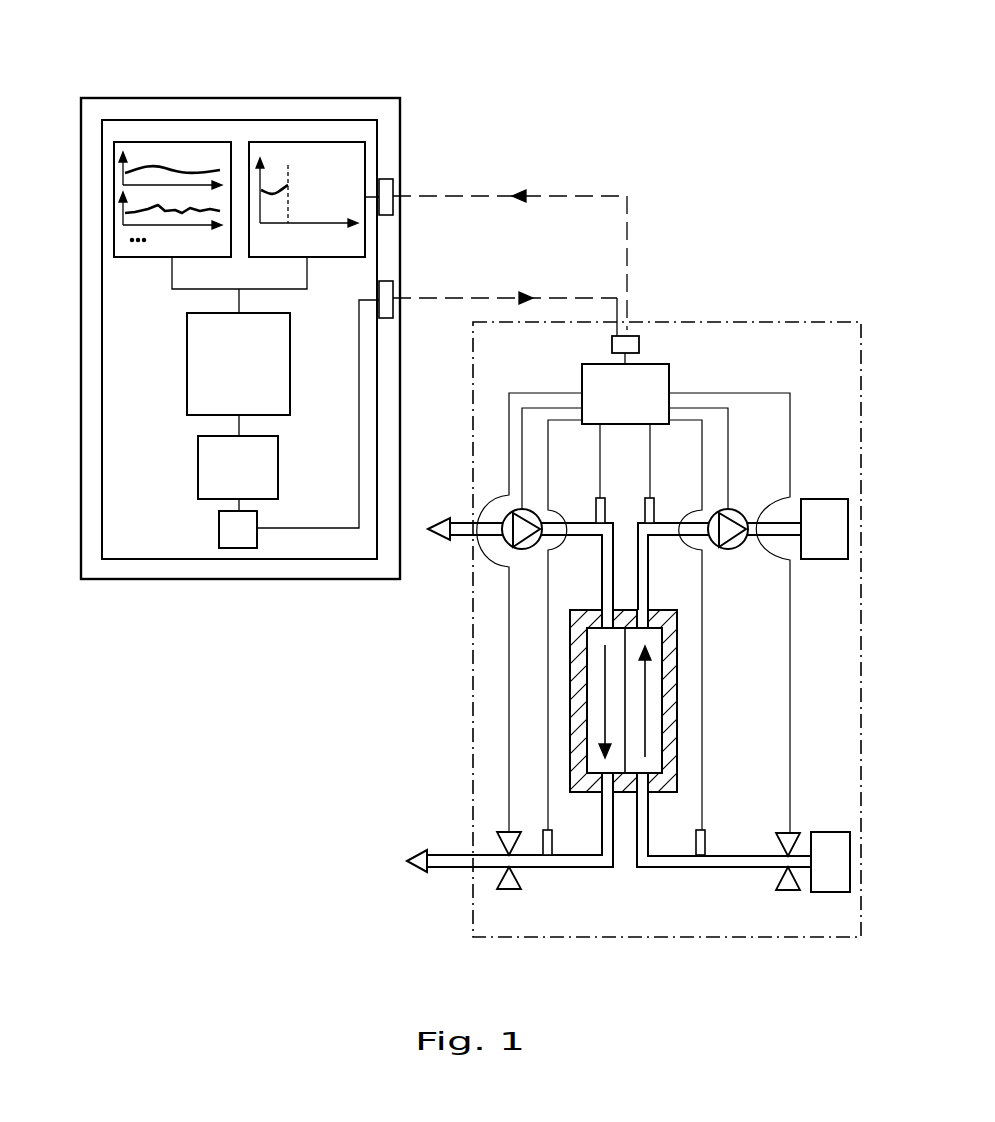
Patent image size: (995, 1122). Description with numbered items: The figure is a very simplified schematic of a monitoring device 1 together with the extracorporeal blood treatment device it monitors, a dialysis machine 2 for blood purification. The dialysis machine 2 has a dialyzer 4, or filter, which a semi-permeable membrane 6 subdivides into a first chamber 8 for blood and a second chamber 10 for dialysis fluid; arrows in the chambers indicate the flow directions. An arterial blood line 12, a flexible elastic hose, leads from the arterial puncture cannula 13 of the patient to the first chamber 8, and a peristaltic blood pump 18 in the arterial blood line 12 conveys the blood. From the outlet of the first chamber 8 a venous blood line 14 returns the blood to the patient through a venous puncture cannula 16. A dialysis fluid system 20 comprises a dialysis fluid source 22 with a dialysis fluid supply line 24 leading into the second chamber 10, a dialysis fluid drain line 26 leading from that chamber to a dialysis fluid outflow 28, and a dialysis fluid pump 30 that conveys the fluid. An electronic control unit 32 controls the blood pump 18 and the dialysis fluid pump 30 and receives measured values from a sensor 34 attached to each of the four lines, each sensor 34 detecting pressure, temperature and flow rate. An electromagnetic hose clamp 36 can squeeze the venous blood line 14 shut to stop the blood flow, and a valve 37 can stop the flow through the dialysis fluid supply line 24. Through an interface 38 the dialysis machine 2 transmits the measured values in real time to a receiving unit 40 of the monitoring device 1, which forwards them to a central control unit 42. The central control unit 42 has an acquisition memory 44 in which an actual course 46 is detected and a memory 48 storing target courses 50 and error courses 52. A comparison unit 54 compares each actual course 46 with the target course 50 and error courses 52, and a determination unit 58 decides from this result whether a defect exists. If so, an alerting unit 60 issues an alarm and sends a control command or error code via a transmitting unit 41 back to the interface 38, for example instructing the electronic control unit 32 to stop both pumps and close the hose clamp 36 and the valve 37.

The monitoring device 1 is at (60, 66).
The dialysis machine 2 is at (823, 322).
The dialyzer 4 is at (623, 701).
The semi-permeable membrane 6 is at (627, 760).
The first chamber 8 is at (597, 640).
The second chamber 10 is at (653, 640).
The arterial blood line 12 is at (462, 527).
The arterial puncture cannula 13 is at (438, 537).
The venous blood line 14 is at (565, 868).
The venous puncture cannula 16 is at (407, 864).
The blood pump 18 is at (532, 548).
The dialysis fluid system 20 is at (815, 486).
The dialysis fluid source 22 is at (822, 845).
The dialysis fluid supply line 24 is at (740, 862).
The dialysis fluid drain line 26 is at (788, 536).
The dialysis fluid outflow 28 is at (828, 552).
The dialysis fluid pump 30 is at (742, 512).
The electronic control unit 32 is at (650, 378).
The sensor 34 is at (650, 497).
The electromagnetic hose clamp 36 is at (509, 890).
The valve 37 is at (788, 890).
The interface 38 is at (633, 337).
The receiving unit 40 is at (389, 188).
The transmitting unit 41 is at (389, 295).
The central control unit 42 is at (375, 118).
The acquisition memory 44 is at (307, 194).
The actual course 46 is at (285, 250).
The memory 48 is at (166, 191).
The target course 50 is at (162, 242).
The error course 52 is at (153, 262).
The comparison unit 54 is at (187, 364).
The determination unit 58 is at (198, 464).
The alerting unit 60 is at (219, 526).